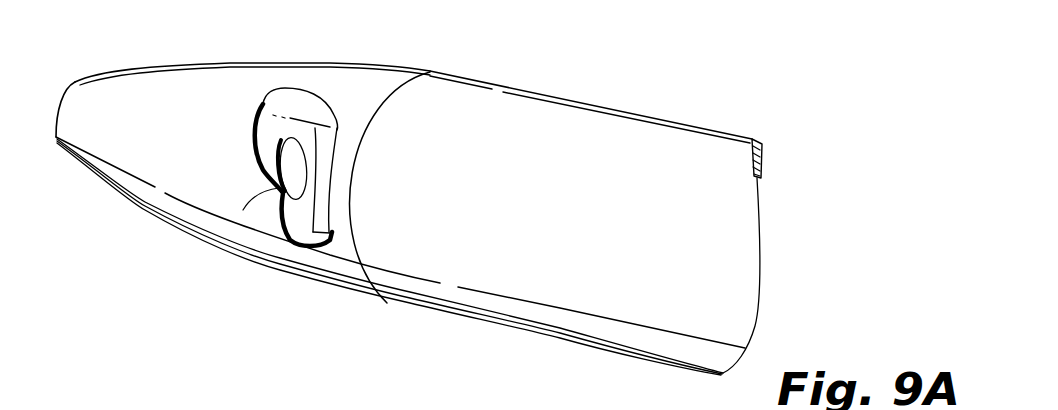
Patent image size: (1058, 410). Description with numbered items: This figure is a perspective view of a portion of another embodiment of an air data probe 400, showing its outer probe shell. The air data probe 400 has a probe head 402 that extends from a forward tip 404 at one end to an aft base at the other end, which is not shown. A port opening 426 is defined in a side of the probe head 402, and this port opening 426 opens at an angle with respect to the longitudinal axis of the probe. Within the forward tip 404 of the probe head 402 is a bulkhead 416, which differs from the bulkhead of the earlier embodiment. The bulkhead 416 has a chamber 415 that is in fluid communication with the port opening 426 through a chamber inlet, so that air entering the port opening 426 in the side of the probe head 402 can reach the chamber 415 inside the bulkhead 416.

The air data probe 400 is at (666, 87).
The probe head 402 is at (553, 105).
The forward tip 404 is at (96, 178).
The chamber 415 is at (293, 165).
The bulkhead 416 is at (312, 128).
The port opening 426 is at (279, 188).